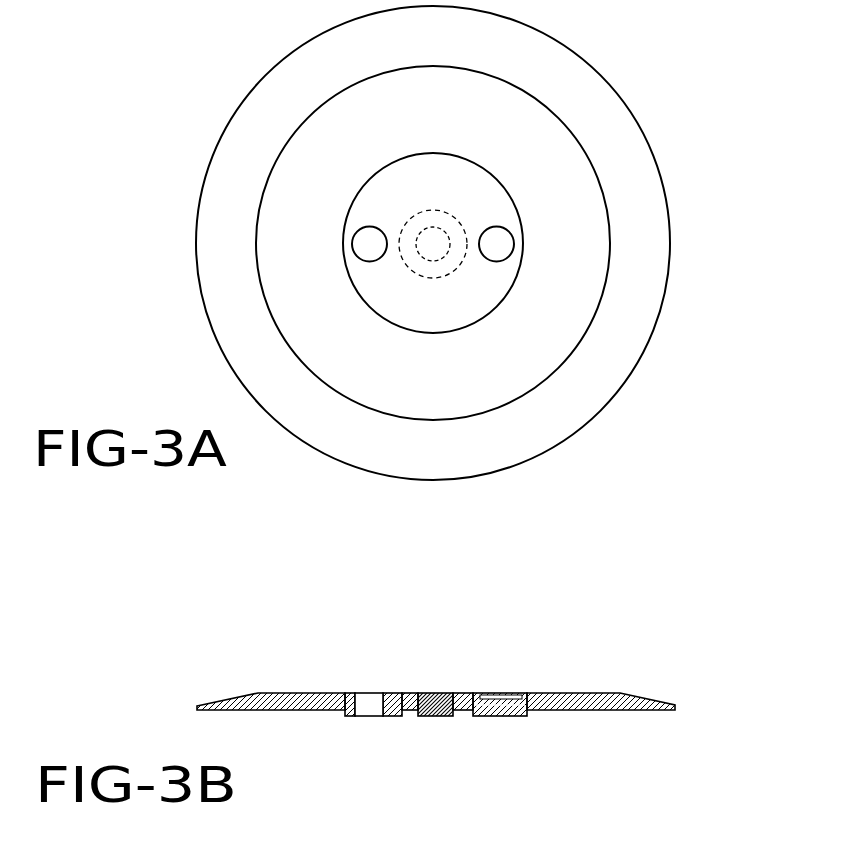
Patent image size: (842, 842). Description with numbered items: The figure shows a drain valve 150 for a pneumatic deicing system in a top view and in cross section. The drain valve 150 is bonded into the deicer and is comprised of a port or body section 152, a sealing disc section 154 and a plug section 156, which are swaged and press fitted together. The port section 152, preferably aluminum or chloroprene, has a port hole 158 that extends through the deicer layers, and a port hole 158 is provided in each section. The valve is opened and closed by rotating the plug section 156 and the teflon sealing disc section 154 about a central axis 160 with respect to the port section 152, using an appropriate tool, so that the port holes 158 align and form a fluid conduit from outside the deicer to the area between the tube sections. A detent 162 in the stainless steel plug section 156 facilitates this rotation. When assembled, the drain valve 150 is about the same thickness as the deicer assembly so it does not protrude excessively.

In FIG. 3A, the drain valve 150 is at (170, 112).
In FIG. 3B, the drain valve 150 is at (174, 679).
In FIG. 3A, the port section 152 is at (632, 153).
In FIG. 3B, the port section 152 is at (240, 696).
In FIG. 3B, the sealing disc section 154 is at (396, 704).
In FIG. 3A, the plug section 156 is at (393, 182).
In FIG. 3B, the plug section 156 is at (447, 695).
In FIG. 3A, the port hole 158 is at (371, 251).
In FIG. 3B, the port hole 158 is at (365, 698).
In FIG. 3A, the central axis 160 is at (433, 243).
In FIG. 3A, the detent 162 is at (498, 240).